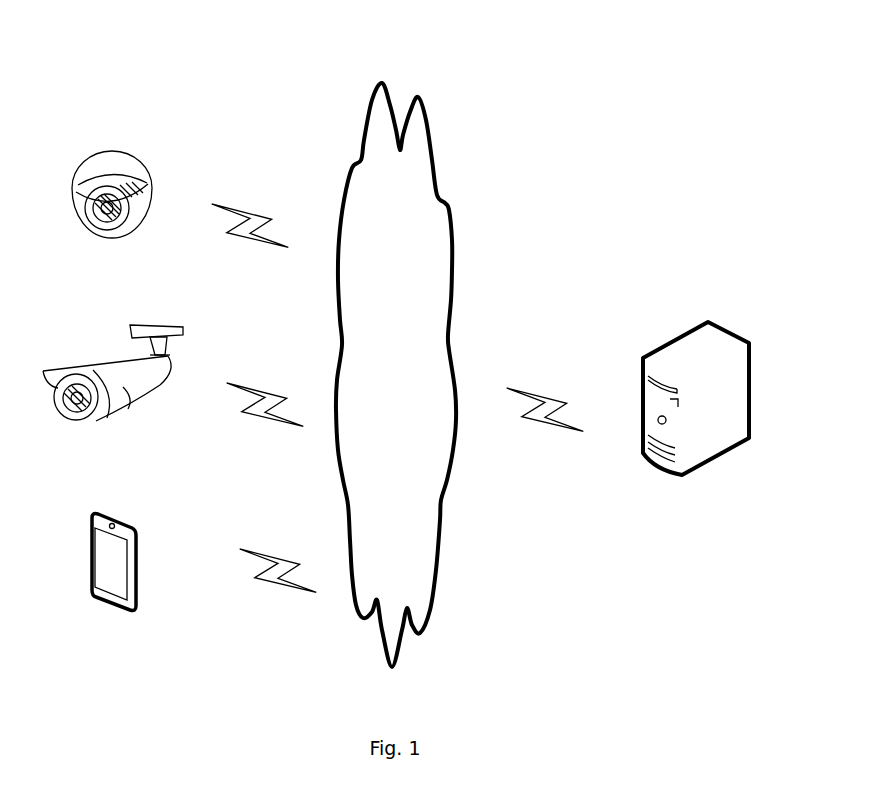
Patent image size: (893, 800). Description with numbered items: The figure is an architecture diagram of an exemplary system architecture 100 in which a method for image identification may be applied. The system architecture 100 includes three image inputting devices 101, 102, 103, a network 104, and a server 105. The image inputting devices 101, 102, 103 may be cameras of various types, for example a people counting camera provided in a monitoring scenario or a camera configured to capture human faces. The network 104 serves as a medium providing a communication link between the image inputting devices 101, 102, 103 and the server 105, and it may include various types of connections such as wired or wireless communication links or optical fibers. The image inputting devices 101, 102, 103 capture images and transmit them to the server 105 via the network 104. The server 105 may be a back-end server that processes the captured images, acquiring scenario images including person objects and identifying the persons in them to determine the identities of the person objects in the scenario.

The system architecture 100 is at (637, 36).
The image inputting device 101 is at (112, 212).
The image inputting device 102 is at (113, 393).
The image inputting device 103 is at (114, 583).
The network 104 is at (396, 375).
The server 105 is at (696, 419).